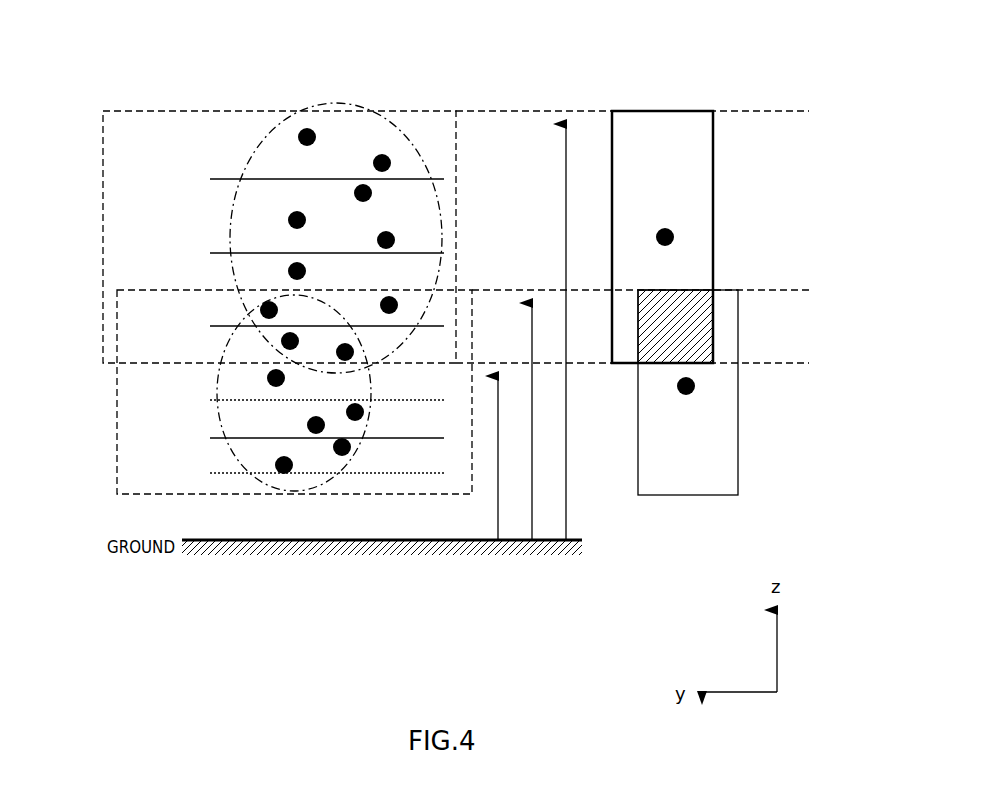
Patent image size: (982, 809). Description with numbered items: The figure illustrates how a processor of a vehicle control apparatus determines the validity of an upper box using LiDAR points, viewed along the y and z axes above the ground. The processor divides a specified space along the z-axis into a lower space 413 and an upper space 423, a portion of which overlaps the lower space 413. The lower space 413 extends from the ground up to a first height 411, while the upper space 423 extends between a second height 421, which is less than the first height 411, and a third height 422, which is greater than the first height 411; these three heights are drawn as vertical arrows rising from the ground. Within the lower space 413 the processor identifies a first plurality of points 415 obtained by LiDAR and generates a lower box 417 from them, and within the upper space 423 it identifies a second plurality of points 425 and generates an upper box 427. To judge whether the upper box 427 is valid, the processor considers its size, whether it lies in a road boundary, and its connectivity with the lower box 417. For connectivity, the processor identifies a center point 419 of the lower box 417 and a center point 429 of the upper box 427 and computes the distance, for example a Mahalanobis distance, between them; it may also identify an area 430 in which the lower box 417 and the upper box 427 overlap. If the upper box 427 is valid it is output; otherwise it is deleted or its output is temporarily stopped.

The first height 411 is at (532, 520).
The lower space 413 is at (117, 447).
The first plurality of points 415 is at (238, 468).
The lower box 417 is at (738, 442).
The center point of the lower box 419 is at (694, 386).
The second height 421 is at (498, 510).
The third height 422 is at (566, 513).
The upper space 423 is at (103, 222).
The second plurality of points 425 is at (395, 125).
The upper box 427 is at (713, 170).
The center point of the upper box 429 is at (672, 235).
The overlap area 430 is at (687, 325).